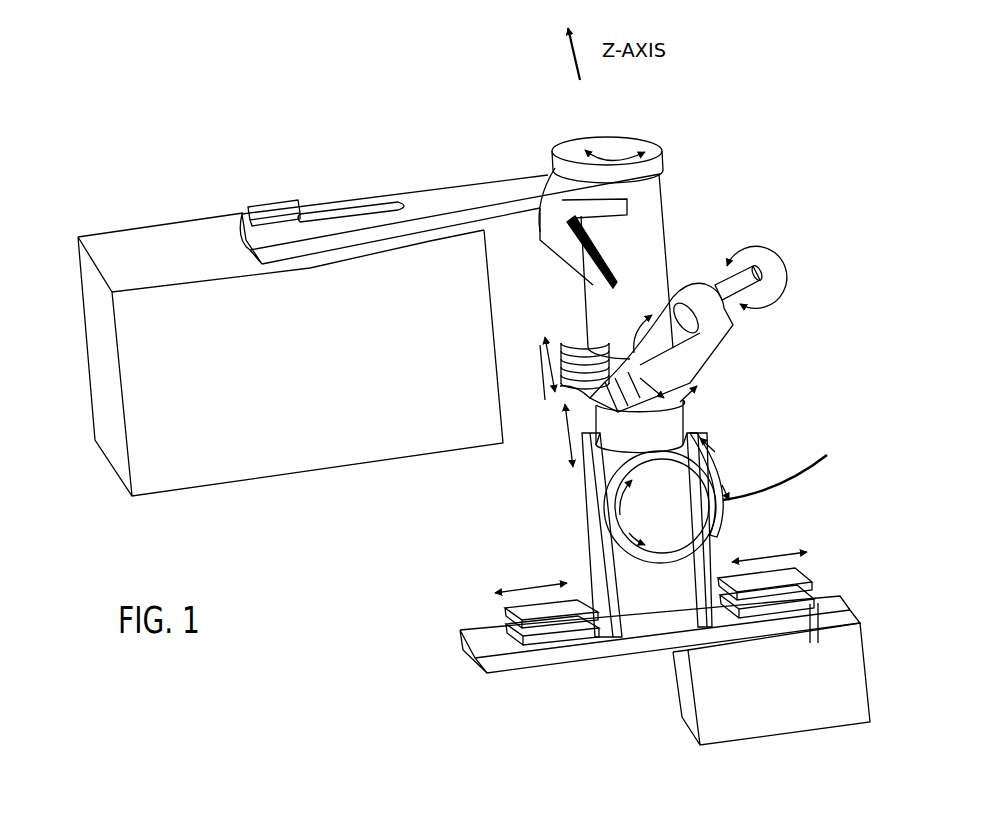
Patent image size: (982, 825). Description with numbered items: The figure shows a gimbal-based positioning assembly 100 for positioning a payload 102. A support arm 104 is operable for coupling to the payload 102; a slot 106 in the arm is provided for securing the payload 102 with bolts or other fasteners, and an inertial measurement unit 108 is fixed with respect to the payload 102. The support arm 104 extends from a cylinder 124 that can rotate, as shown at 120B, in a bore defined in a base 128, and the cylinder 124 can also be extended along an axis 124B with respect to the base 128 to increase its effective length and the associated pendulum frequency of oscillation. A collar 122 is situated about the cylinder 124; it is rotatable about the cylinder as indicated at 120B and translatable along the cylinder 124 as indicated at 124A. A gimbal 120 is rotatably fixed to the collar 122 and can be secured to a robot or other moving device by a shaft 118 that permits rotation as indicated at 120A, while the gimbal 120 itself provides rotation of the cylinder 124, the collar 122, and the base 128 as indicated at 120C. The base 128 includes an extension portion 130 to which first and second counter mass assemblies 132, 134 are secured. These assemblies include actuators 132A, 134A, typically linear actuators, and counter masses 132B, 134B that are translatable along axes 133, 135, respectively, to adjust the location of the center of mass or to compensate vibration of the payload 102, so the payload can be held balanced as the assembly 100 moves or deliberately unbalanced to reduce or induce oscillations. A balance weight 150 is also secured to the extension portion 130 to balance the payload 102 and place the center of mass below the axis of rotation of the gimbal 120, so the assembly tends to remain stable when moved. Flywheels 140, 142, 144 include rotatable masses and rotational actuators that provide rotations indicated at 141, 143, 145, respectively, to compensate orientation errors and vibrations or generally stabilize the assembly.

The gimbal-based positioning assembly 100 is at (104, 128).
The payload 102 is at (148, 427).
The support arm 104 is at (486, 184).
The slot 106 is at (352, 214).
The inertial measurement unit 108 is at (268, 205).
The shaft 118 is at (735, 307).
The gimbal 120 is at (708, 347).
The rotation 120A is at (784, 270).
The rotation 120B is at (690, 400).
The rotation 120C is at (612, 330).
The collar 122 is at (546, 338).
The cylinder 124 is at (600, 345).
The translation 124A is at (535, 360).
The axis 124B is at (565, 440).
The base 128 is at (590, 410).
The extension portion 130 is at (478, 672).
The first counter mass assembly 132 is at (497, 630).
The actuator 132A is at (472, 655).
The counter mass 132B is at (512, 627).
The axis 133 is at (518, 588).
The second counter mass assembly 134 is at (805, 596).
The actuator 134A is at (856, 577).
The counter mass 134B is at (790, 582).
The axis 135 is at (778, 551).
The flywheel 140 is at (658, 553).
The rotation 141 is at (603, 514).
The flywheel 142 is at (787, 468).
The rotation 143 is at (729, 462).
The flywheel 144 is at (600, 137).
The rotation 145 is at (566, 224).
The balance weight 150 is at (685, 735).